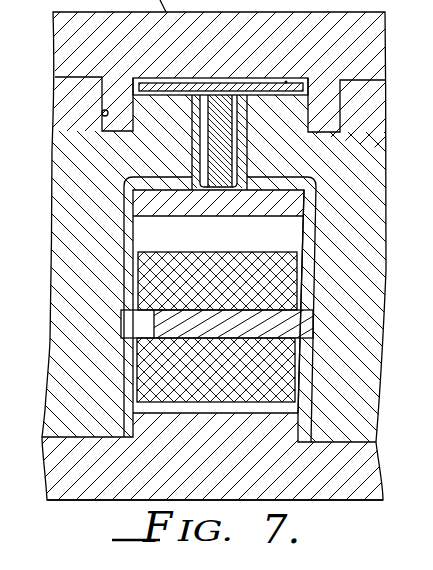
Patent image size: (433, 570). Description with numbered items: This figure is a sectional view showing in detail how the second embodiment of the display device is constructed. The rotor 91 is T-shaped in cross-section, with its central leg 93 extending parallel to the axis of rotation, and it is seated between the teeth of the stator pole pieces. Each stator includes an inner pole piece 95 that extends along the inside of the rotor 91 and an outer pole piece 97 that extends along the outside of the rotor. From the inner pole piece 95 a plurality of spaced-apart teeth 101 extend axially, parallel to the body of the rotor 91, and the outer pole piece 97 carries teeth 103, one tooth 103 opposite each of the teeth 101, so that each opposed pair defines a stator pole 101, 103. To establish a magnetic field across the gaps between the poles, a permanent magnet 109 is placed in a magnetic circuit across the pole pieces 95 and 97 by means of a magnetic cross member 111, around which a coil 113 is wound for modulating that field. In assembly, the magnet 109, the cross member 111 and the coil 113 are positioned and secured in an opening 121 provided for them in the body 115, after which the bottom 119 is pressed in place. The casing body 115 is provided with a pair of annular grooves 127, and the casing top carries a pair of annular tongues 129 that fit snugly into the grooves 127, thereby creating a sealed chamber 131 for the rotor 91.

The rotor 91 is at (257, 84).
The central leg of the rotor 93 is at (224, 160).
The inner pole piece 95 is at (314, 257).
The outer pole piece 97 is at (127, 203).
The teeth of the inner pole piece 101 is at (251, 127).
The teeth of the outer pole piece 103 is at (192, 146).
The permanent magnet 109 is at (146, 312).
The magnetic cross member 111 is at (292, 326).
The coil 113 is at (217, 238).
The body 115 is at (62, 322).
The bottom 119 is at (356, 496).
The opening 121 is at (294, 409).
The annular grooves 127 is at (108, 94).
The annular tongues 129 is at (101, 117).
The sealed chamber 131 is at (286, 82).